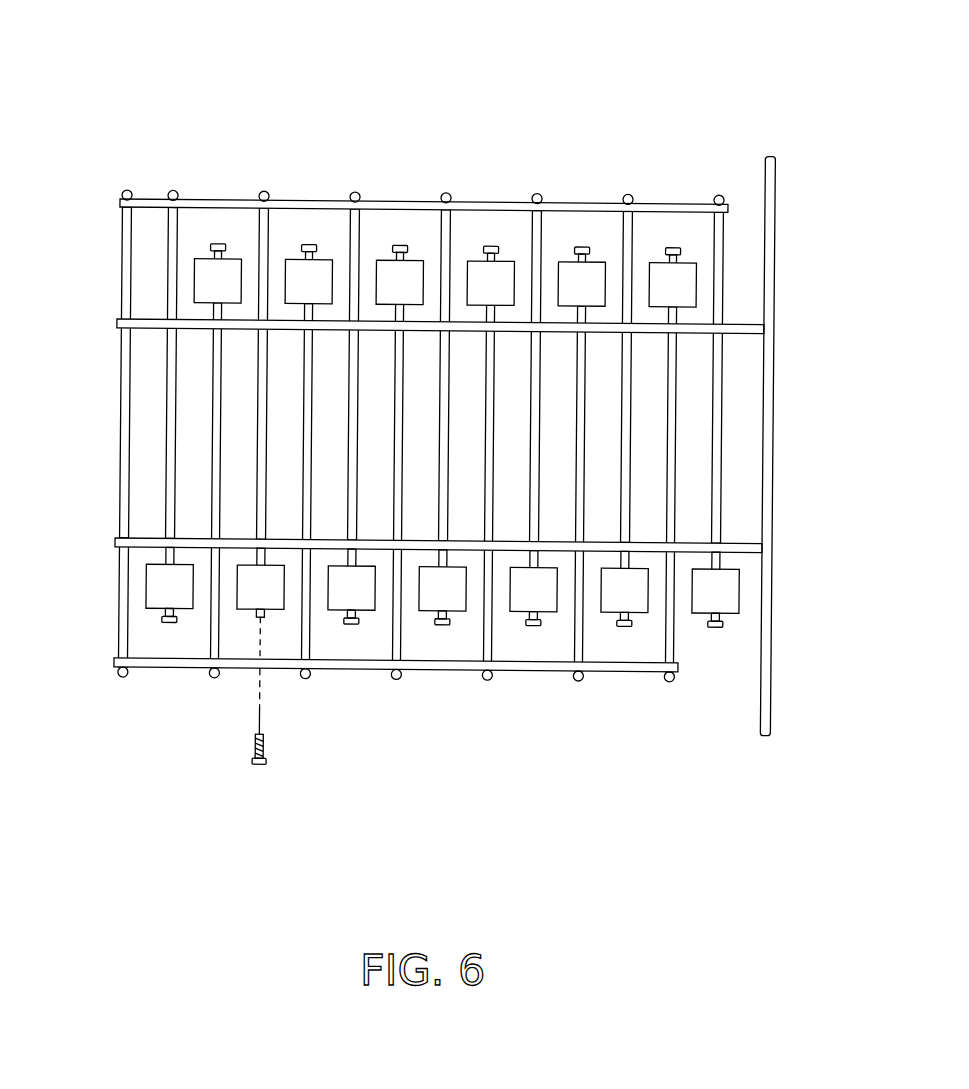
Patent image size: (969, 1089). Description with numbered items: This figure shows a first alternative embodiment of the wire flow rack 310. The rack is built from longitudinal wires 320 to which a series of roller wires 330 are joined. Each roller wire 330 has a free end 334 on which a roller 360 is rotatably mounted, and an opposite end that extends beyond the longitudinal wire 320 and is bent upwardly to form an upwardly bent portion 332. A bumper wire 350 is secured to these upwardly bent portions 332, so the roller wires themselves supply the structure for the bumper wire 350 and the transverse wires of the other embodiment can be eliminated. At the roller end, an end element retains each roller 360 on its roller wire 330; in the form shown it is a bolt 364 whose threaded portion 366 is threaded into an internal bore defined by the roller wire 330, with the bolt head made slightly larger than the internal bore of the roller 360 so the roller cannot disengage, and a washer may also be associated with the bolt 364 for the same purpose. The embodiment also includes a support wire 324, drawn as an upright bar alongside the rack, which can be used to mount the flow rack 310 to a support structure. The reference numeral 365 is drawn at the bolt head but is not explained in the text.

The wire flow rack 310 is at (183, 107).
The longitudinal wires 320 is at (118, 538).
The support wire 324 is at (767, 183).
The roller wires 330 is at (374, 398).
The upwardly bent portion 332 is at (268, 195).
The free ends 334 is at (167, 560).
The bumper wire 350 is at (393, 199).
The rollers 360 is at (165, 588).
The bolt 364 is at (170, 622).
The screw head 365 is at (262, 765).
The threaded portion 366 is at (265, 743).